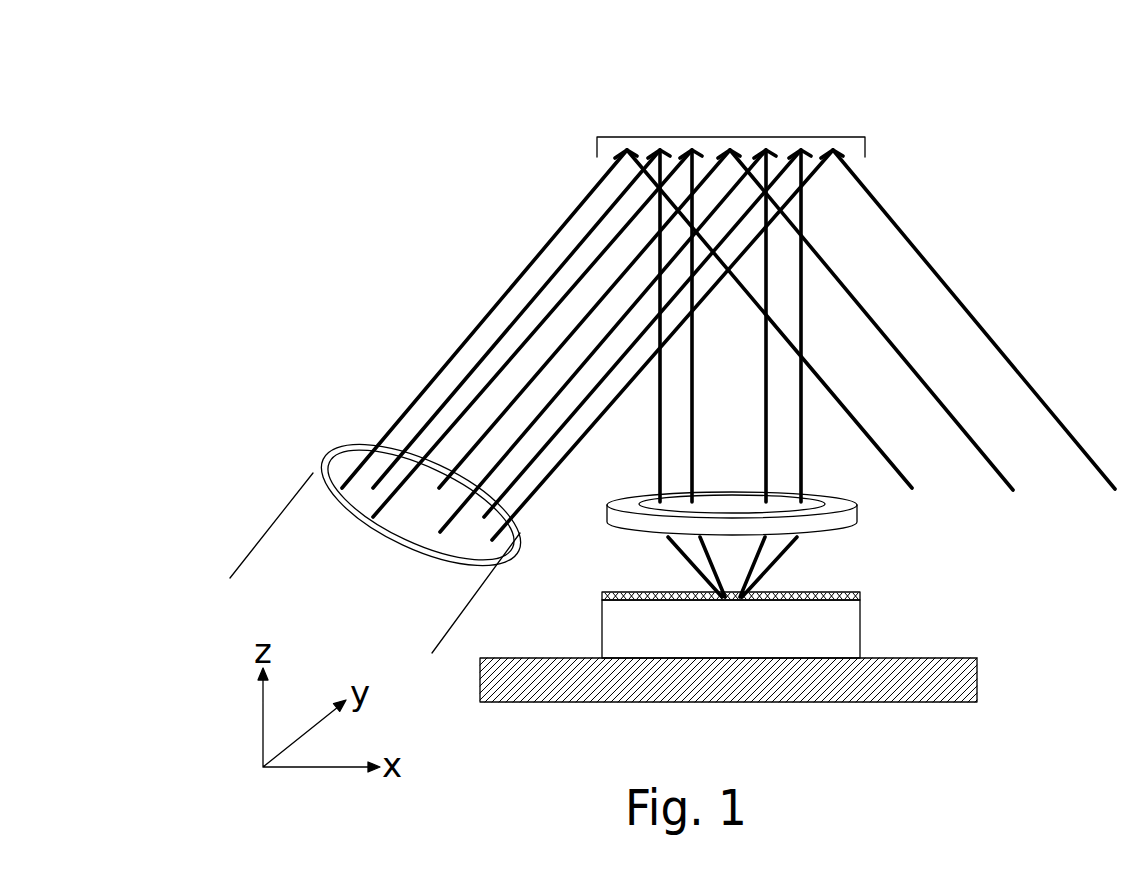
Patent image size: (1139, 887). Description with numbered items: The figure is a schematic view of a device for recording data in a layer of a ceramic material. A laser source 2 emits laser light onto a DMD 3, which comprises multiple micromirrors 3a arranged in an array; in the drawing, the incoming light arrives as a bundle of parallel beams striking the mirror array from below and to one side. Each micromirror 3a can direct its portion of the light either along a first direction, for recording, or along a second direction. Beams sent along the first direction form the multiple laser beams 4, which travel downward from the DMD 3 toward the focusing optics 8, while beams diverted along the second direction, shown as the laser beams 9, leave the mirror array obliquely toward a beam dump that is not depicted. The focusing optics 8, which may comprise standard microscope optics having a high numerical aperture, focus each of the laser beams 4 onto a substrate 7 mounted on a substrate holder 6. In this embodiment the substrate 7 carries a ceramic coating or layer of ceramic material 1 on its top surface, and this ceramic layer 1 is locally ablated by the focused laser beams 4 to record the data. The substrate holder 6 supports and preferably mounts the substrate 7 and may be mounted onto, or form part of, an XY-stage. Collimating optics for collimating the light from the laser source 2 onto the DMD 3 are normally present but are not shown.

The layer of ceramic material 1 is at (618, 593).
The laser source 2 is at (290, 497).
The DMD 3 is at (817, 130).
The micromirrors 3a is at (692, 138).
The laser beams 4 is at (692, 475).
The substrate holder 6 is at (982, 680).
The substrate 7 is at (838, 633).
The focusing optics 8 is at (843, 503).
The laser beams along second direction 9 is at (877, 443).